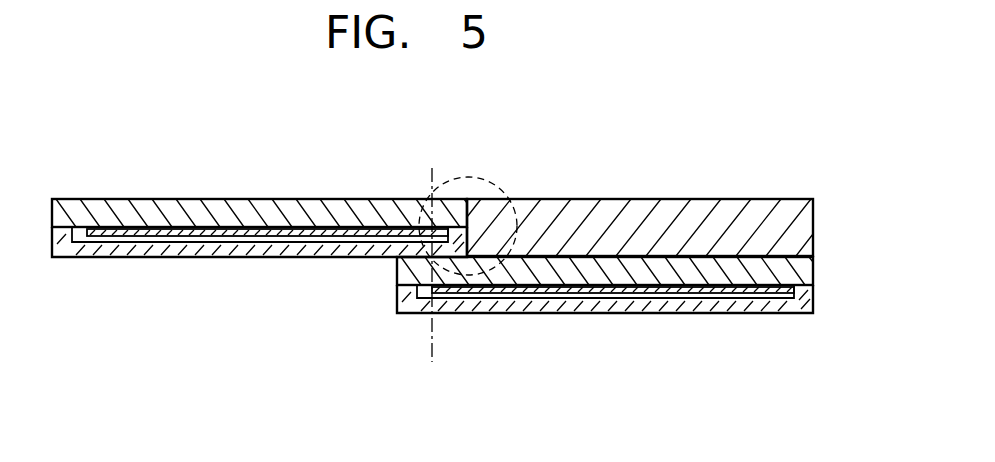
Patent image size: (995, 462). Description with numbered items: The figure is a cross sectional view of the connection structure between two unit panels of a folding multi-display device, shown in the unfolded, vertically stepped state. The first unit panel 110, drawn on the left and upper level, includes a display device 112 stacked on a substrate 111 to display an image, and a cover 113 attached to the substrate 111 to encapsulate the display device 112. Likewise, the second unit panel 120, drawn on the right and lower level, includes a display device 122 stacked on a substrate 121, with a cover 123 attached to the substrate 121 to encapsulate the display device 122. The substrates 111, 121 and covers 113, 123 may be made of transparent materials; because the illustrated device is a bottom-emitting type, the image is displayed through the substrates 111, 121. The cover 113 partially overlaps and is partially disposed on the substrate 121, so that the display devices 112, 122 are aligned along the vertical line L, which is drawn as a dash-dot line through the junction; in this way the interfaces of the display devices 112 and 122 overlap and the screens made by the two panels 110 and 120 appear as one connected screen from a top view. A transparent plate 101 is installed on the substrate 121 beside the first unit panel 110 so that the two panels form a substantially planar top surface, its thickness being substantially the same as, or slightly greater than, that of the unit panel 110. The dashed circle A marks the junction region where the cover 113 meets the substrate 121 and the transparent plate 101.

The transparent plate 101 is at (818, 226).
The first unit panel 110 is at (243, 245).
The substrate 111 is at (108, 212).
The display device 112 is at (167, 232).
The cover 113 is at (234, 250).
The second unit panel 120 is at (643, 328).
The substrate 121 is at (818, 272).
The display device 122 is at (770, 318).
The cover 123 is at (815, 311).
The enlarged region A is at (468, 177).
The vertical line L is at (433, 284).